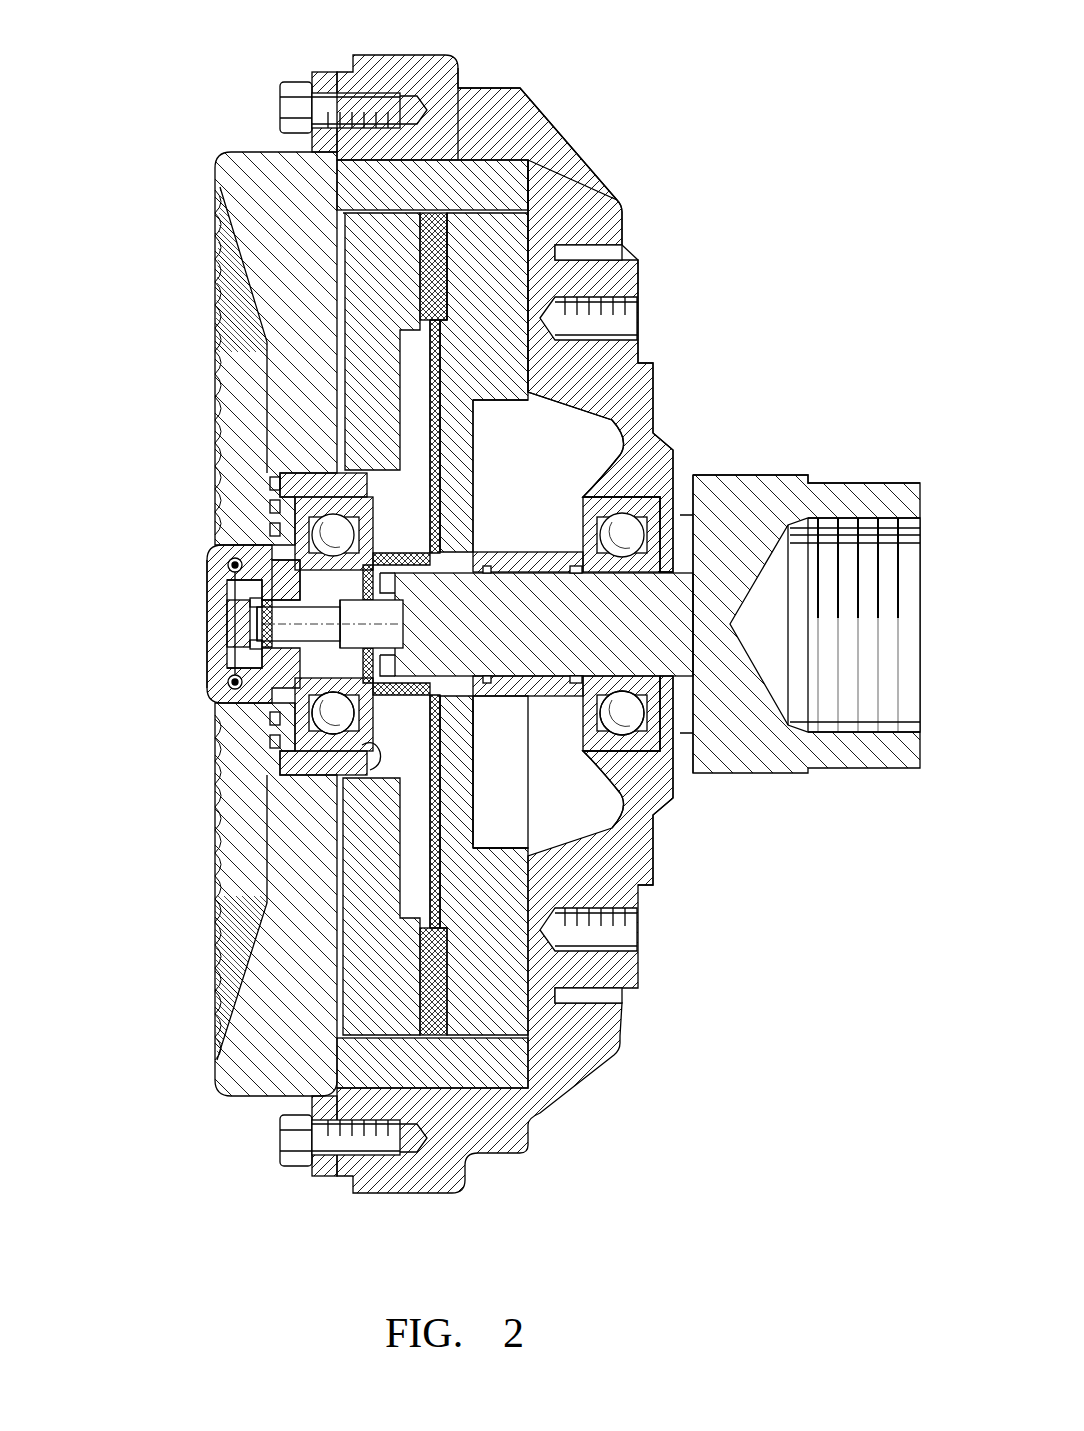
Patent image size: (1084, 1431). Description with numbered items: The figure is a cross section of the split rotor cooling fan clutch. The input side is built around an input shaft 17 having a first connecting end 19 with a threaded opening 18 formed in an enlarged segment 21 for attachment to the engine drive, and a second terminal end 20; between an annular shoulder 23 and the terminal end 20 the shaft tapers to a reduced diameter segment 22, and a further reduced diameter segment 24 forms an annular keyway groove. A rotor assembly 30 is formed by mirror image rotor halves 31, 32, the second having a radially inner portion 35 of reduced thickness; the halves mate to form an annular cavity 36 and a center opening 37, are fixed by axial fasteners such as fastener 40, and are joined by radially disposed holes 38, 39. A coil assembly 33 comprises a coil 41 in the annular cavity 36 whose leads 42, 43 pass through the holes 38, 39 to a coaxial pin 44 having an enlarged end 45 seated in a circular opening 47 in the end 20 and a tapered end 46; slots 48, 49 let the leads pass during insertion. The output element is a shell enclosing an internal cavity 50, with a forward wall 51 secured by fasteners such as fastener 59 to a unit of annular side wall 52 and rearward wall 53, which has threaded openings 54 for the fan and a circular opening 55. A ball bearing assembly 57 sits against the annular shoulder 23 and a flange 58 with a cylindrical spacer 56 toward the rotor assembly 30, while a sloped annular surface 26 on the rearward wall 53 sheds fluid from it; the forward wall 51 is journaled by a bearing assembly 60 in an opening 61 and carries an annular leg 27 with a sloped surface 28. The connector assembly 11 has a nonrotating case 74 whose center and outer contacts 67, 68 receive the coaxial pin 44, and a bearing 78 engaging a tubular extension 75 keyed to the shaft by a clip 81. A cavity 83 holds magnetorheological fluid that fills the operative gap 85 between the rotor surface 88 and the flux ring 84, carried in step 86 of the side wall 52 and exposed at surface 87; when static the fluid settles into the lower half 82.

The connector assembly 11 is at (198, 638).
The input shaft 17 is at (753, 466).
The threaded opening 18 is at (898, 720).
The first connecting end 19 is at (921, 485).
The second terminal end 20 is at (248, 598).
The enlarged segment 21 is at (797, 478).
The reduced diameter segment 22 is at (550, 676).
The annular shoulder 23 is at (688, 518).
The further reduced diameter segment 24 is at (583, 676).
The sloped annular surface 26 is at (607, 482).
The inwardly extending annular leg 27 is at (345, 482).
The sloped surface 28 is at (397, 840).
The rotor assembly 30 is at (355, 990).
The rotor half 31 is at (380, 858).
The rotor half 32 is at (533, 857).
The coil assembly 33 is at (438, 1063).
The radially inner portion 35 is at (393, 413).
The annular cavity 36 is at (510, 218).
The center opening 37 is at (490, 552).
The radially disposed hole 38 is at (442, 326).
The radially disposed hole 39 is at (432, 882).
The fastener 40 is at (473, 552).
The coil 41 is at (438, 1005).
The lead 42 is at (440, 394).
The lead 43 is at (447, 925).
The coaxial pin 44 is at (245, 650).
The enlarged end 45 is at (405, 613).
The tapered end 46 is at (250, 612).
The circular opening 47 is at (340, 650).
The slot 48 is at (313, 590).
The slot 49 is at (327, 722).
The internal cavity 50 is at (485, 792).
The forward wall 51 is at (240, 152).
The annular side wall 52 is at (400, 55).
The rearward wall 53 is at (657, 885).
The threaded openings 54 is at (607, 910).
The circular opening 55 is at (667, 745).
The cylindrical spacer 56 is at (495, 685).
The ball bearing assembly 57 is at (627, 712).
The flange 58 is at (620, 735).
The fastener 59 is at (292, 84).
The bearing assembly 60 is at (360, 790).
The opening 61 is at (370, 752).
The center contact 67 is at (225, 608).
The outer contact 68 is at (238, 690).
The case 74 is at (253, 627).
The tubular extension 75 is at (313, 573).
The bearing 78 is at (247, 645).
The clip 81 is at (372, 583).
The lower half 82 is at (563, 815).
The cavity 83 is at (413, 213).
The flux ring 84 is at (508, 183).
The operative gap 85 is at (400, 1038).
The step 86 is at (495, 165).
The surface 87 is at (437, 250).
The surface 88 is at (442, 242).